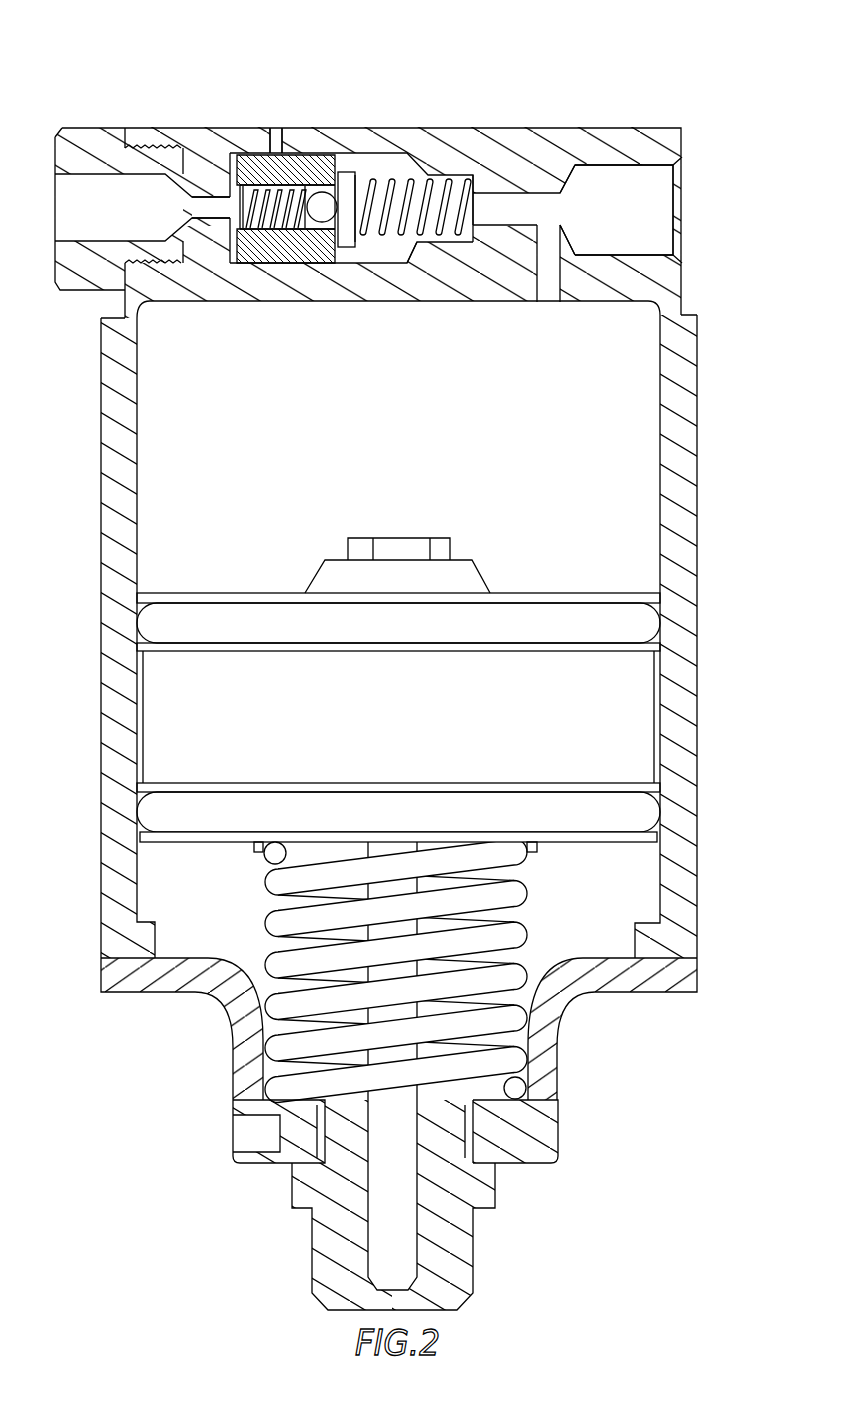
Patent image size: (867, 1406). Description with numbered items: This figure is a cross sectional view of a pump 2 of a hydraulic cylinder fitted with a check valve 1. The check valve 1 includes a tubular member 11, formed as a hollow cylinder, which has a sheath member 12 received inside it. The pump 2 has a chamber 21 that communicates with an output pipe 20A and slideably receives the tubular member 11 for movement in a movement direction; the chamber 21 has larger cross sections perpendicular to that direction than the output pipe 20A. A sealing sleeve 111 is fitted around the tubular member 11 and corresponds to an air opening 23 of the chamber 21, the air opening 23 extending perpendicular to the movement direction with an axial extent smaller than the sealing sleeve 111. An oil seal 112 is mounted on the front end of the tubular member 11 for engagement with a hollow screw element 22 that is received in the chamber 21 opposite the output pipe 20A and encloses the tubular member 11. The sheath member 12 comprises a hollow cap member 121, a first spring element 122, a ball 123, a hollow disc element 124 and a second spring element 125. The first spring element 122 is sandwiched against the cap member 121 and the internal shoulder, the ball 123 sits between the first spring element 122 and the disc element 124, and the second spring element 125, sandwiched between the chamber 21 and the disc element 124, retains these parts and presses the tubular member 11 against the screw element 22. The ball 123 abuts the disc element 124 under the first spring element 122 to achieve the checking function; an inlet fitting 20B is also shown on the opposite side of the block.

The check valve 1 is at (249, 262).
The pump 2 is at (678, 485).
The tubular member 11 is at (240, 153).
The sheath member 12 is at (372, 178).
The output pipe 20A is at (520, 205).
The inlet port 20B is at (190, 195).
The chamber 21 is at (388, 160).
The hollow screw element 22 is at (68, 262).
The air opening 23 is at (278, 128).
The sealing sleeve 111 is at (290, 263).
The oil seal 112 is at (210, 240).
The hollow cap member 121 is at (245, 263).
The first spring element 122 is at (272, 263).
The ball 123 is at (318, 225).
The hollow disc element 124 is at (350, 248).
The second spring element 125 is at (442, 262).